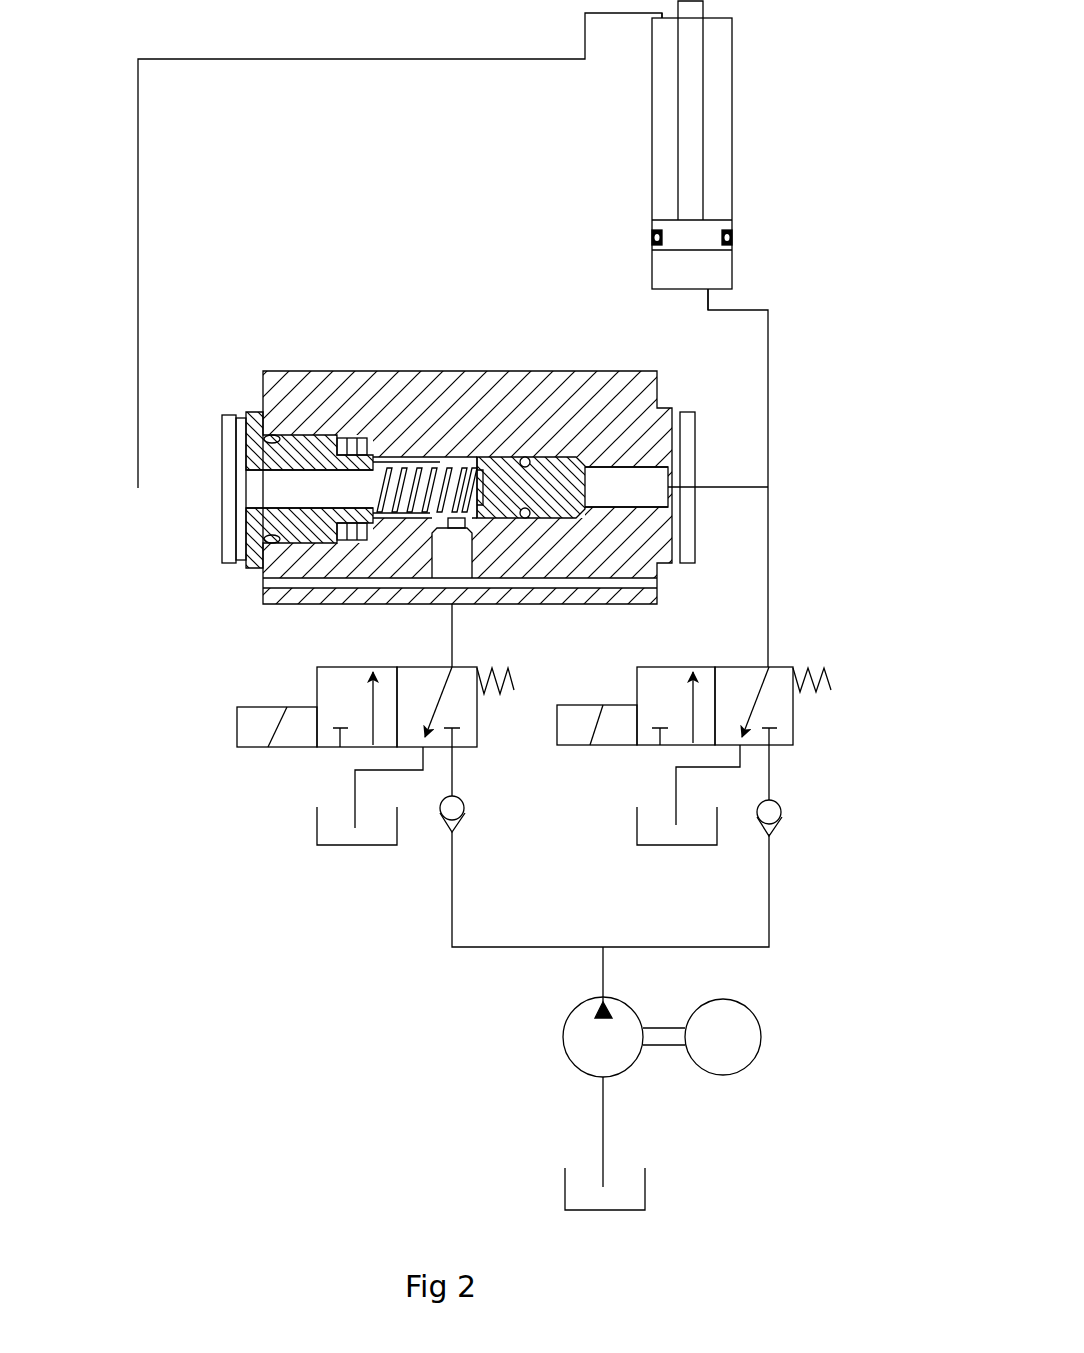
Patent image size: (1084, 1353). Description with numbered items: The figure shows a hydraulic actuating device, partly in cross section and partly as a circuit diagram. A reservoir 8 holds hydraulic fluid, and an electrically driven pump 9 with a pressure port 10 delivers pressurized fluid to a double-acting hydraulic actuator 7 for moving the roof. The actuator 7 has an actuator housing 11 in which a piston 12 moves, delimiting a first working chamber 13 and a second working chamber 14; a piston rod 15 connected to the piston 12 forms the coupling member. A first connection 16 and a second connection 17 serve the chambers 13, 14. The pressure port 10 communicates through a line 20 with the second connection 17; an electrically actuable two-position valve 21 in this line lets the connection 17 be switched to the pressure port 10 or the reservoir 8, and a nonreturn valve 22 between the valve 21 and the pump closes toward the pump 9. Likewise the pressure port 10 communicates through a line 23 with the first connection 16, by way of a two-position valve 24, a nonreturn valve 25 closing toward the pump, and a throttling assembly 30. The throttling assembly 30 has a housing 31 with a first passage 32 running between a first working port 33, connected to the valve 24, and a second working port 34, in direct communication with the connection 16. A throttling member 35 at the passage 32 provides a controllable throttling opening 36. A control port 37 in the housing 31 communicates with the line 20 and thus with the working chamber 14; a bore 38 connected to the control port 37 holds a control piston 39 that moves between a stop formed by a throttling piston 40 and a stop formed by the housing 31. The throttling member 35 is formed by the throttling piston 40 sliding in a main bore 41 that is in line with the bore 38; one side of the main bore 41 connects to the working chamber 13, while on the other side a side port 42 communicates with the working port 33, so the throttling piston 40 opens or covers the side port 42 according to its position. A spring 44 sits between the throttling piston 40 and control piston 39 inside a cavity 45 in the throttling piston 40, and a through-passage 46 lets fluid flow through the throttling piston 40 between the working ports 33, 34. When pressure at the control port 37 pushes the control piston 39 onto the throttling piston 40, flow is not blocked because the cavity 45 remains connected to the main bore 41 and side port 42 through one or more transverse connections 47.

The double-acting hydraulic actuator 7 is at (668, 169).
The reservoir 8 is at (317, 820).
The electrically driven pump 9 is at (578, 1030).
The pressure port 10 is at (603, 1000).
The actuator housing 11 is at (733, 105).
The piston 12 is at (680, 241).
The first working chamber 13 is at (660, 115).
The second working chamber 14 is at (683, 277).
The piston rod 15 is at (693, 80).
The first connection 16 is at (662, 33).
The second connection 17 is at (705, 293).
The line 20 is at (770, 600).
The electrically actuable two-position valve 21 is at (707, 645).
The nonreturn valve 22 is at (797, 800).
The line 23 is at (138, 270).
The electrically actuable two-position valve 24 is at (265, 695).
The nonreturn valve 25 is at (467, 795).
The throttling assembly 30 is at (450, 426).
The housing 31 is at (520, 380).
The first passage 32 is at (278, 495).
The first working port 33 is at (452, 600).
The second working port 34 is at (222, 487).
The throttling member 35 is at (423, 443).
The throttling opening 36 is at (432, 560).
The control port 37 is at (672, 480).
The bore 38 is at (568, 517).
The control piston 39 is at (550, 507).
The throttling piston 40 is at (368, 450).
The main bore 41 is at (448, 530).
The side port 42 is at (465, 527).
The spring 44 is at (447, 500).
The cavity 45 is at (373, 485).
The through-passage 46 is at (243, 443).
The transverse connections 47 is at (480, 480).